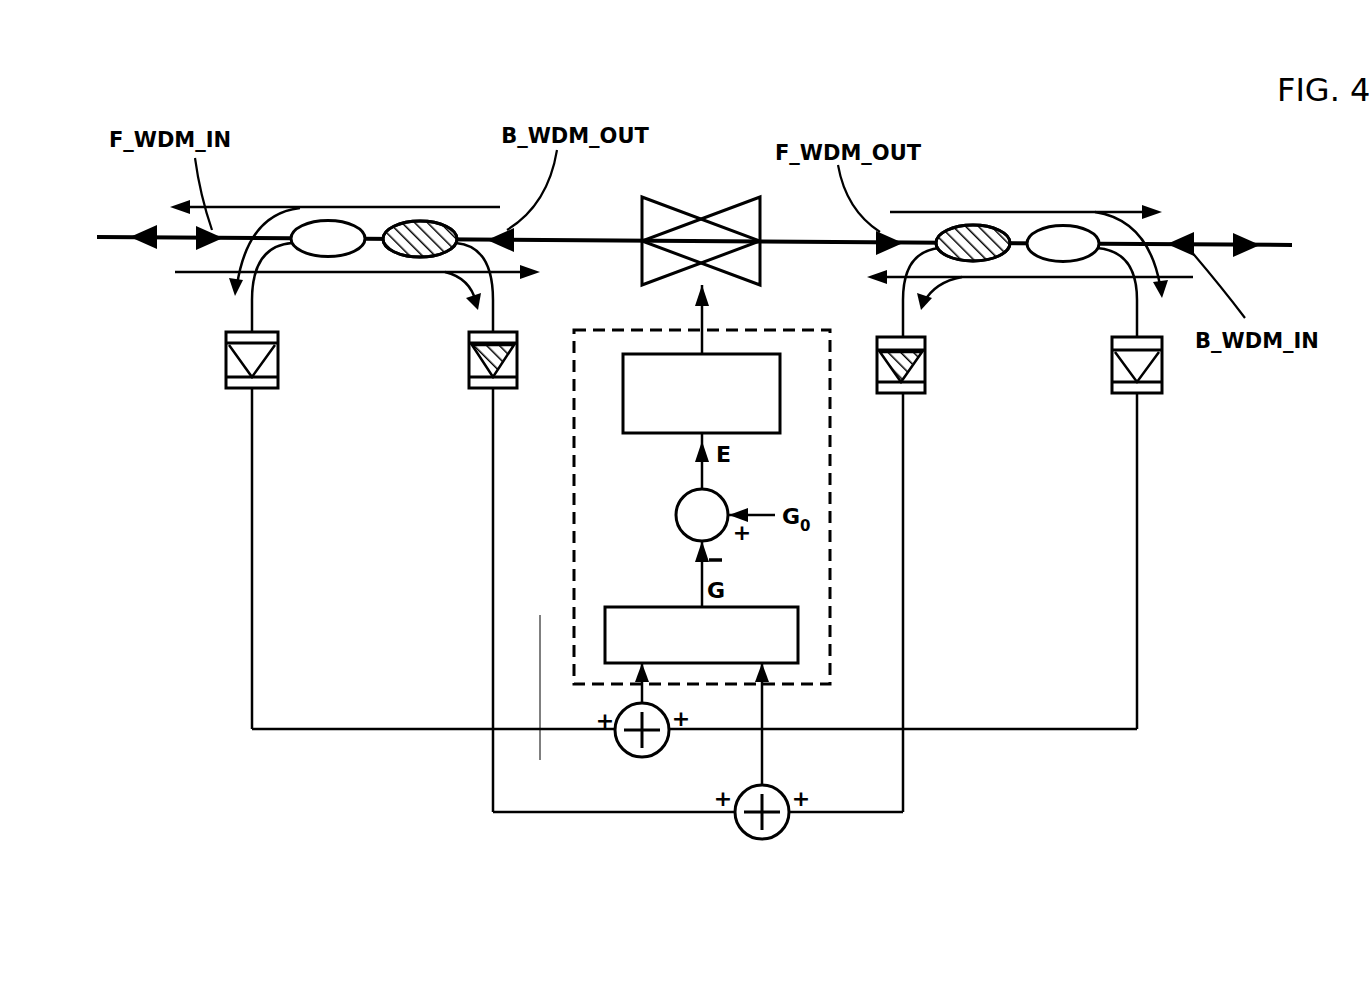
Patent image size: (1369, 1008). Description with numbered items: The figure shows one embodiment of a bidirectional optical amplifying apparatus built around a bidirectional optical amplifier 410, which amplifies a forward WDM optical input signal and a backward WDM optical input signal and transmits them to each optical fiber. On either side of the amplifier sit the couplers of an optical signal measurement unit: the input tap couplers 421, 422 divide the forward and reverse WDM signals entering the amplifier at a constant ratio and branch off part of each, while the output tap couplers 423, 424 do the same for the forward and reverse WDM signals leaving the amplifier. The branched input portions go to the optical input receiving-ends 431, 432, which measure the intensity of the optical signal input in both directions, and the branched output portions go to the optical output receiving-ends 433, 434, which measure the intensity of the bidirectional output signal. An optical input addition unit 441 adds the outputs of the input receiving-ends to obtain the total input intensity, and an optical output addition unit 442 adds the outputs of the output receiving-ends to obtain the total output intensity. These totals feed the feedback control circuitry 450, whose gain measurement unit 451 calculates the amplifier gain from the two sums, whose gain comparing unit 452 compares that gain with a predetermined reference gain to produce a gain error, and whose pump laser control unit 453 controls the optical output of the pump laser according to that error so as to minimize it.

The bidirectional optical amplifier 410 is at (670, 208).
The input tap coupler 421 is at (418, 221).
The input tap coupler 422 is at (978, 225).
The output tap coupler 423 is at (330, 220).
The output tap coupler 424 is at (1073, 225).
The optical input receiving-end 431 is at (487, 367).
The optical input receiving-end 432 is at (915, 367).
The optical output receiving-end 433 is at (260, 353).
The optical output receiving-end 434 is at (1125, 363).
The optical input addition unit 441 is at (783, 822).
The optical output addition unit 442 is at (630, 752).
The feedback control circuitry 450 is at (573, 503).
The gain measurement unit 451 is at (605, 632).
The gain comparing unit 452 is at (678, 508).
The pump laser control unit 453 is at (636, 396).